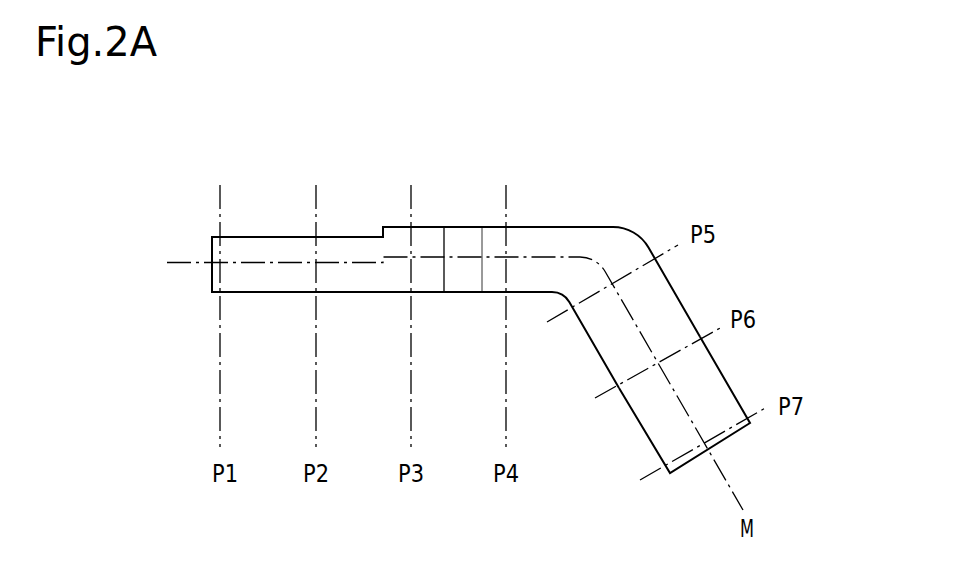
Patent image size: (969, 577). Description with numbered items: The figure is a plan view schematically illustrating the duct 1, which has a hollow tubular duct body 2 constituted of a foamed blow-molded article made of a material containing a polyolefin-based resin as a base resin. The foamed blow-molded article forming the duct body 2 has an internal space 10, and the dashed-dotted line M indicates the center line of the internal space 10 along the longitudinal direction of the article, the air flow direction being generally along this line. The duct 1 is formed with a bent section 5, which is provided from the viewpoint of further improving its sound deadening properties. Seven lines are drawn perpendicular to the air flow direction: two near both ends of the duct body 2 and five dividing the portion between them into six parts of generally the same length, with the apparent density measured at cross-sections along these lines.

The duct 1 is at (620, 204).
The duct body 2 is at (548, 248).
The bent section 5 is at (553, 292).
The internal space 10 is at (667, 412).